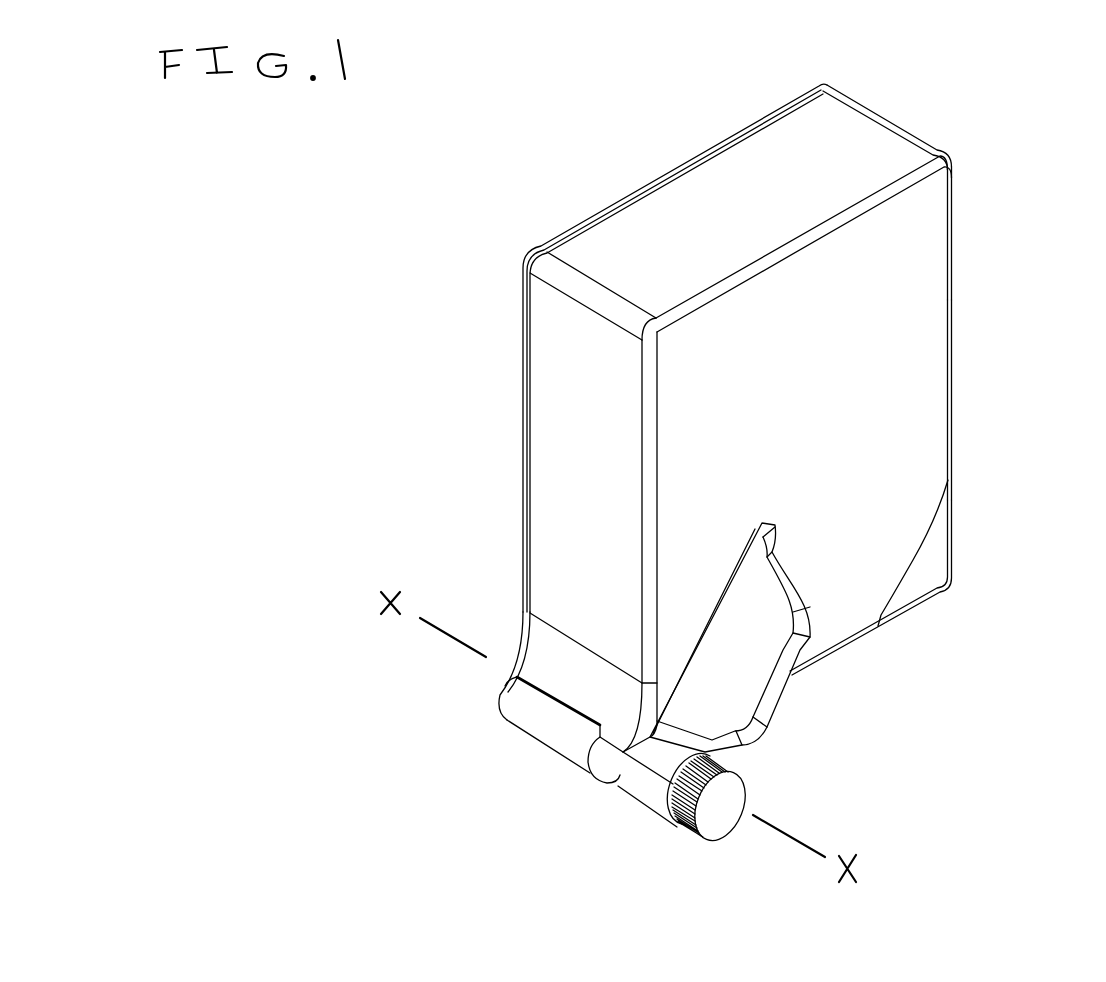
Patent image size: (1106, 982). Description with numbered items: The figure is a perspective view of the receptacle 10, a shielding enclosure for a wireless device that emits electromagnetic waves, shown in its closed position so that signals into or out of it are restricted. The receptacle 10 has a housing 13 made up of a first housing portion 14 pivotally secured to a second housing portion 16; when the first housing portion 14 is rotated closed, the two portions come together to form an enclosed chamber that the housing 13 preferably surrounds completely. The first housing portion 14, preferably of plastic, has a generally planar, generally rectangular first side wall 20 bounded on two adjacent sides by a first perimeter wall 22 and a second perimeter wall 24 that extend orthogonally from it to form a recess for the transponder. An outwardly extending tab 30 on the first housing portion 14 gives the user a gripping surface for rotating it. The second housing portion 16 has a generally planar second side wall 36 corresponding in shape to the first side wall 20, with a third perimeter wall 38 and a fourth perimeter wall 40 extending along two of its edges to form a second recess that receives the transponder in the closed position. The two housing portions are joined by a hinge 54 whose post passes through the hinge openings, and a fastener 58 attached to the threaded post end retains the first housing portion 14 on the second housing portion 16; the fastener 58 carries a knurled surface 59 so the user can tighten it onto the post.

The receptacle 10 is at (397, 216).
The housing 13 is at (952, 438).
The first housing portion 14 is at (565, 440).
The second housing portion 16 is at (952, 547).
The first side wall 20 is at (908, 359).
The first perimeter wall 22 is at (562, 375).
The second perimeter wall 24 is at (747, 165).
The tab 30 is at (768, 698).
The second side wall 36 is at (627, 193).
The third perimeter wall 38 is at (878, 628).
The fourth perimeter wall 40 is at (952, 204).
The hinge 54 is at (590, 778).
The fastener 58 is at (707, 842).
The knurled surface 59 is at (677, 827).